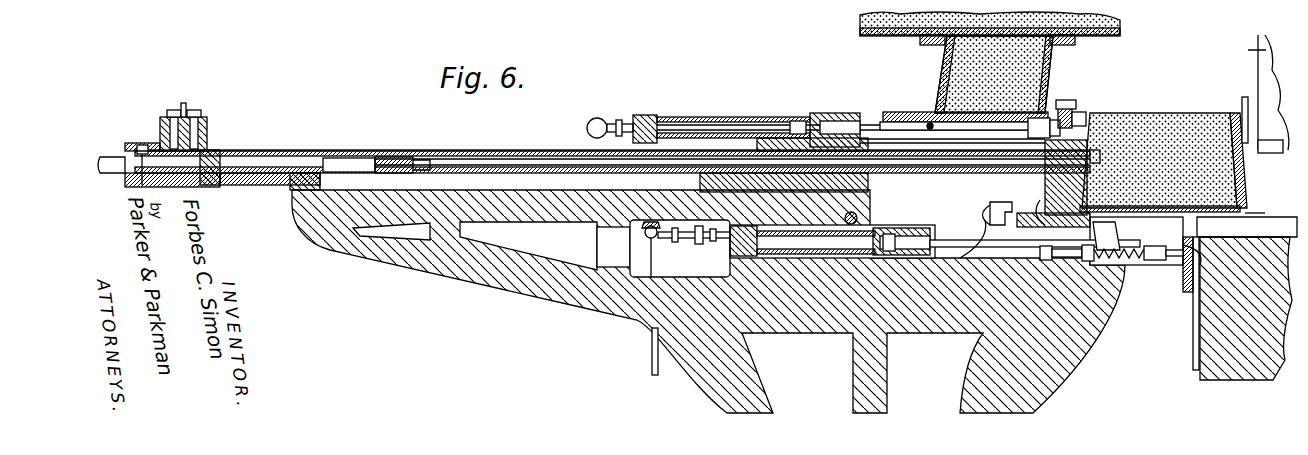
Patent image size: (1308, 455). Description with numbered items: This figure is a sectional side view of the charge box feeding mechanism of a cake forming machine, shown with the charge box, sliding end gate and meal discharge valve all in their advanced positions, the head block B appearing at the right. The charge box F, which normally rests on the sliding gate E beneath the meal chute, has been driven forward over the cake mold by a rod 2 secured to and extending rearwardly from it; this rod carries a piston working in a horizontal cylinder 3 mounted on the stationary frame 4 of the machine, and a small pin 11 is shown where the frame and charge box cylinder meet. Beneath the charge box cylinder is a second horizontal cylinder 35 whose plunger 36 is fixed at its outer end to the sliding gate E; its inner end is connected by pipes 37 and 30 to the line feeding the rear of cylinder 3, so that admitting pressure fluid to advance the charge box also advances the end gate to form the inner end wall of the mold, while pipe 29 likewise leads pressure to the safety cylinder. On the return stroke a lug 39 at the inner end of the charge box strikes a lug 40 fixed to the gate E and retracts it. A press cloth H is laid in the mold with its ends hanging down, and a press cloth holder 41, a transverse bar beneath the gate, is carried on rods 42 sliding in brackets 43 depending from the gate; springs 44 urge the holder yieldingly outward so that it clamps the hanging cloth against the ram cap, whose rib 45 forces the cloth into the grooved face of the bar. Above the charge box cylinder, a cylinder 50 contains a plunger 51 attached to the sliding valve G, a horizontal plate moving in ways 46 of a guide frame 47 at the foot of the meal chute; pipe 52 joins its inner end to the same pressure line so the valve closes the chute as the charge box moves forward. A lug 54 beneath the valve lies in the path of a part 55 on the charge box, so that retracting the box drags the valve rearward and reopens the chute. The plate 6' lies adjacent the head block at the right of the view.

The rod 2 is at (386, 150).
The charge box cylinder 3 is at (530, 150).
The stationary frame 4 is at (602, 300).
The pivot pin 11 is at (862, 214).
The pipe 29 is at (650, 356).
The pipe 30 is at (622, 250).
The horizontal cylinder 35 is at (818, 285).
The plunger 36 is at (962, 250).
The pipe 37 is at (722, 242).
The lug 39 is at (1050, 208).
The lug 40 is at (998, 205).
The press cloth holder 41 is at (1182, 282).
The rods 42 is at (1172, 262).
The brackets 43 is at (1138, 245).
The springs 44 is at (1045, 255).
The rib 45 is at (1190, 290).
The ways 46 is at (1066, 105).
The guide frame 47 is at (1085, 118).
The cylinder 50 is at (722, 118).
The plunger 51 is at (952, 144).
The pipe 52 is at (620, 125).
The lug 54 is at (1038, 138).
The part 55 is at (1068, 118).
The plate 6' is at (1247, 228).
The head block B is at (1257, 92).
The sliding gate E is at (1270, 158).
The charge box F is at (1213, 110).
The sliding valve G is at (893, 112).
The press cloth H is at (1247, 213).